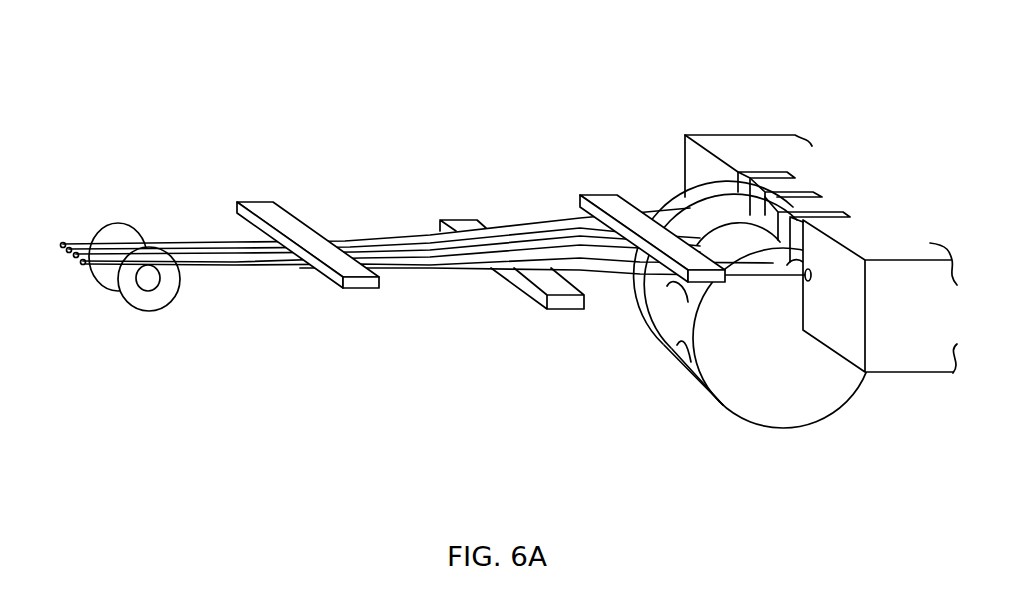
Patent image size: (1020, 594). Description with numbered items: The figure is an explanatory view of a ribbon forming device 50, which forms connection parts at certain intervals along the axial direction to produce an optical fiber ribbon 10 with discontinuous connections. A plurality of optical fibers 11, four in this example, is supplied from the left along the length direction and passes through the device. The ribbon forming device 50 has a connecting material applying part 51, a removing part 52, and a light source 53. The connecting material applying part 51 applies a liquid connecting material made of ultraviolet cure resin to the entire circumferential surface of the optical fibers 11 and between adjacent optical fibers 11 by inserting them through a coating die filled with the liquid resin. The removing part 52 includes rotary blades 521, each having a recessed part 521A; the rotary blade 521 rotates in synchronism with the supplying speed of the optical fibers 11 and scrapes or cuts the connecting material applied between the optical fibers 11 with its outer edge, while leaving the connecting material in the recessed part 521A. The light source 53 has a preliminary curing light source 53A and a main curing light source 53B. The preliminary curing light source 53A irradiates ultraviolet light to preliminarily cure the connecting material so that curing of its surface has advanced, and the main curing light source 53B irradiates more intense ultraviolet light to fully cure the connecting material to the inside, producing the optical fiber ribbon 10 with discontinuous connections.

The optical fiber ribbon with discontinuous connections 10 is at (60, 273).
The optical fibers 11 is at (63, 243).
The ribbon forming device 50 is at (363, 96).
The connecting material applying part 51 is at (750, 147).
The removing part 52 is at (760, 299).
The rotary blade 521 is at (787, 395).
The recessed part 521A is at (773, 262).
The light source 53 is at (481, 249).
The preliminary curing light source 53A is at (609, 203).
The main curing light source 53B is at (366, 286).